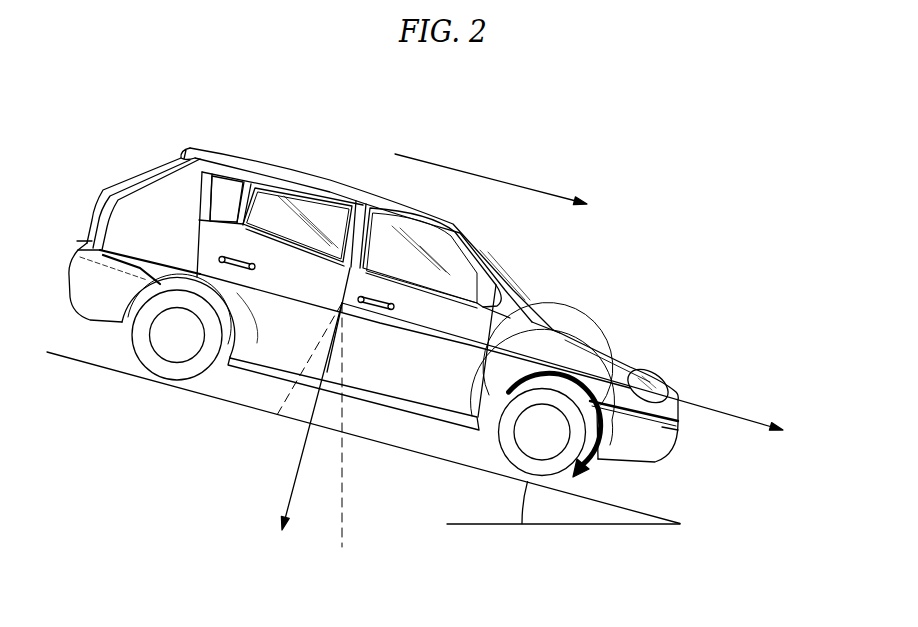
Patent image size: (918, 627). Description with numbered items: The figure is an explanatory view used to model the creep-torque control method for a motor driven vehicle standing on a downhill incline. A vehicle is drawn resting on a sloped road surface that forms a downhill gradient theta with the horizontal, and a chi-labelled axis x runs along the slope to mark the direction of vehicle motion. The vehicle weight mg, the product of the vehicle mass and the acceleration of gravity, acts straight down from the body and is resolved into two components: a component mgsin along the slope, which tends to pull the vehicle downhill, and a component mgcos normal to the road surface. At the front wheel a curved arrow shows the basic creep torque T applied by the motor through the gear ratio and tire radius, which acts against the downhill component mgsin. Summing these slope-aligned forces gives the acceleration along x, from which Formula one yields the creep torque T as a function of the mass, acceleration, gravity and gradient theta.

The basic creep torque T is at (558, 433).
The downhill gradient theta is at (513, 503).
The vehicle position coordinate x is at (502, 187).
The gravity force component along the slope mgsin is at (591, 381).
The gravity component normal to slope (mg cos theta) mgcos is at (267, 432).
The vehicle weight mg is at (317, 439).